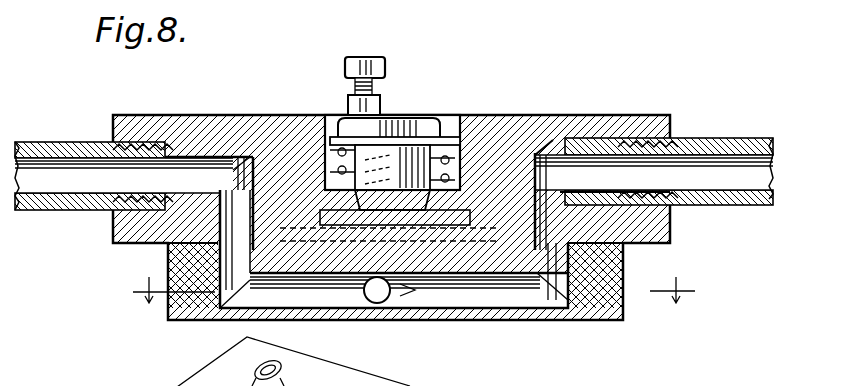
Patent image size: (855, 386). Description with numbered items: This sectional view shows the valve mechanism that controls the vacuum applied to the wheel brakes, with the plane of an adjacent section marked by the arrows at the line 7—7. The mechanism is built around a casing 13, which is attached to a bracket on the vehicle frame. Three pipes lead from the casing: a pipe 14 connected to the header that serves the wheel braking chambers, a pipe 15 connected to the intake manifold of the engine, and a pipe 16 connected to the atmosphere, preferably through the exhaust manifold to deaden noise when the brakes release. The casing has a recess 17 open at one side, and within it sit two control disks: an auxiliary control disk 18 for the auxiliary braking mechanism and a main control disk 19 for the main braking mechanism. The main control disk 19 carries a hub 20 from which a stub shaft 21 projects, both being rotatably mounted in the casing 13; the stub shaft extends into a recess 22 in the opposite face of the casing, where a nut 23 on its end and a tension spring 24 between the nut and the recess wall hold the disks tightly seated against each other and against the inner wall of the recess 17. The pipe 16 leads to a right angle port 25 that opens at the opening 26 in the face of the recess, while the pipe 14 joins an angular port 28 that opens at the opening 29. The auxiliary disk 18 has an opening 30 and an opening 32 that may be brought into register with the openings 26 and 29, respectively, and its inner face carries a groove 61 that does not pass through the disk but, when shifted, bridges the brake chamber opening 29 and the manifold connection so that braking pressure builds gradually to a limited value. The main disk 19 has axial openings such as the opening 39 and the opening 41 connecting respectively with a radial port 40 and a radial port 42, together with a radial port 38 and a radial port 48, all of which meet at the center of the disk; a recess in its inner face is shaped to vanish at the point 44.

The section line 7- 7 is at (413, 294).
The casing 13 is at (572, 128).
The pipe 14 is at (50, 137).
The pipe 15 is at (293, 361).
The pipe 16 is at (740, 140).
The recess 17 is at (185, 290).
The auxiliary control disk 18 is at (530, 130).
The main control disk 19 is at (514, 300).
The hub 20 is at (490, 200).
The stub shaft 21 is at (438, 180).
The recess 22 is at (333, 130).
The nut 23 is at (396, 160).
The tension spring 24 is at (468, 180).
The right angle port 25 is at (630, 145).
The opening 26 is at (650, 222).
The angular port 28 is at (200, 136).
The opening 29 is at (233, 205).
The opening 30 is at (140, 240).
The opening 32 is at (625, 268).
The radial port 38 is at (377, 303).
The opening 39 is at (640, 300).
The radial port 40 is at (525, 320).
The opening 41 is at (210, 285).
The radial port 42 is at (290, 300).
The point 44 is at (460, 300).
The radial port 48 is at (425, 300).
The groove 61 is at (290, 225).